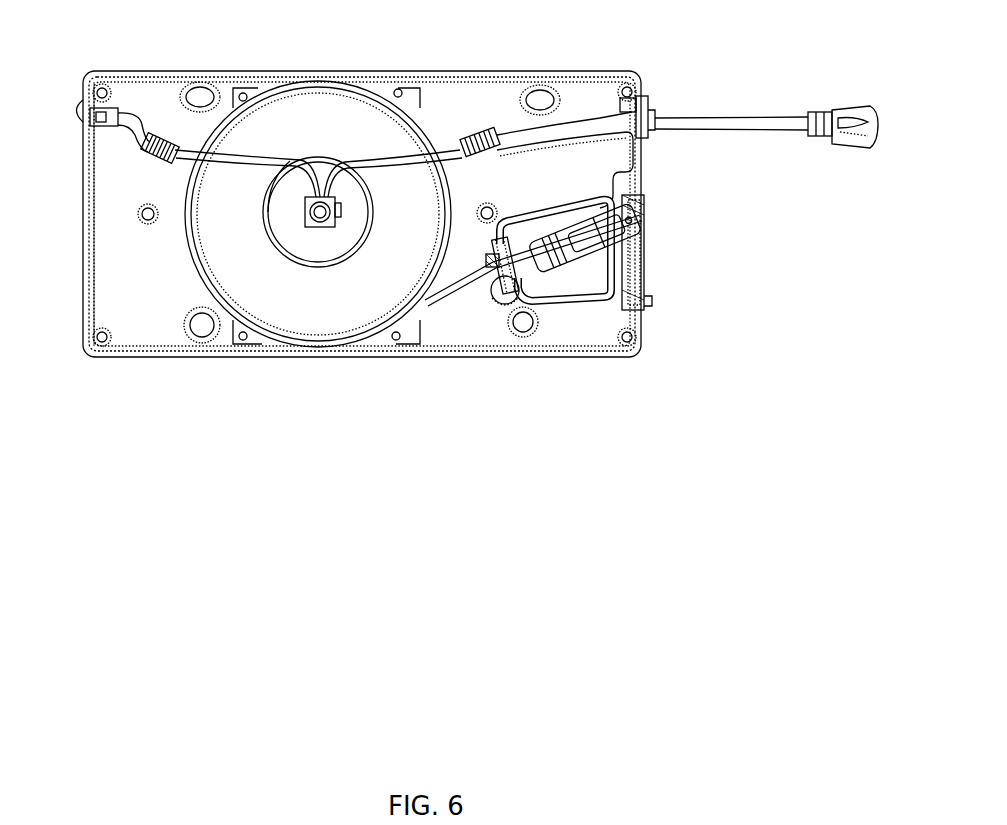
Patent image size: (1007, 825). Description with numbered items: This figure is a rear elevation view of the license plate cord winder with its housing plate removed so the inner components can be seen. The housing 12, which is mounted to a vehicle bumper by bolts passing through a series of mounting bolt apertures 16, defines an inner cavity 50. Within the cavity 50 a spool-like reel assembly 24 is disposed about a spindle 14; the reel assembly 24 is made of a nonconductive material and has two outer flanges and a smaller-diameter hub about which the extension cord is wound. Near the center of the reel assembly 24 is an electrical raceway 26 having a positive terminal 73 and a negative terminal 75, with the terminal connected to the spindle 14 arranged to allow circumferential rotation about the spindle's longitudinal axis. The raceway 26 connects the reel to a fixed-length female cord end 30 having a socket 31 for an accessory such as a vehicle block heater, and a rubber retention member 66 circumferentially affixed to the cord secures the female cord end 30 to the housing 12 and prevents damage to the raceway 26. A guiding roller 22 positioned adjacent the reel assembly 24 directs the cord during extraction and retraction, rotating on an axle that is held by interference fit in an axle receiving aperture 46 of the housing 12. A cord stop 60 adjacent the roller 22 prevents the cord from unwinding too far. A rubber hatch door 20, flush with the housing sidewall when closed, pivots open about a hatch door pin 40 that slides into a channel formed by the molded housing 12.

The housing 12 is at (84, 186).
The spindle 14 is at (318, 223).
The mounting bolt apertures 16 is at (200, 102).
The hatch door 20 is at (640, 255).
The guiding roller 22 is at (488, 270).
The reel assembly 24 is at (372, 133).
The electrical raceway 26 is at (263, 160).
The female cord end 30 is at (733, 128).
The socket 31 is at (832, 118).
The hatch door pin 40 is at (520, 288).
The axle receiving aperture 46 is at (518, 318).
The inner cavity 50 is at (128, 296).
The cord stop 60 is at (636, 302).
The retention member 66 is at (655, 118).
The positive terminal 73 is at (338, 218).
The negative terminal 75 is at (100, 90).